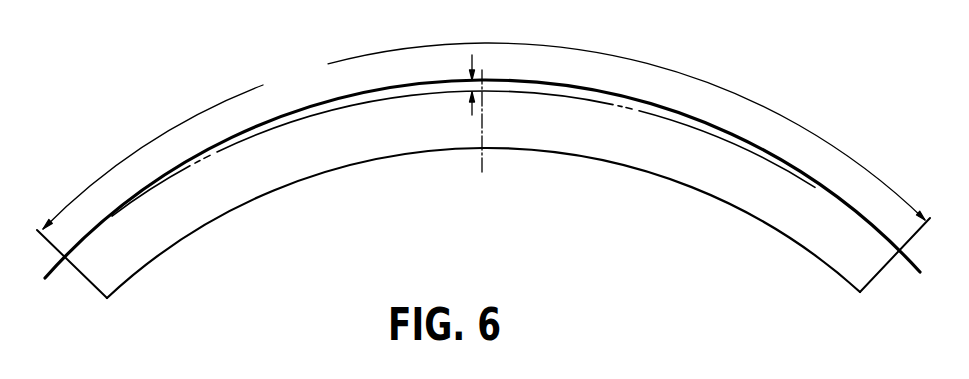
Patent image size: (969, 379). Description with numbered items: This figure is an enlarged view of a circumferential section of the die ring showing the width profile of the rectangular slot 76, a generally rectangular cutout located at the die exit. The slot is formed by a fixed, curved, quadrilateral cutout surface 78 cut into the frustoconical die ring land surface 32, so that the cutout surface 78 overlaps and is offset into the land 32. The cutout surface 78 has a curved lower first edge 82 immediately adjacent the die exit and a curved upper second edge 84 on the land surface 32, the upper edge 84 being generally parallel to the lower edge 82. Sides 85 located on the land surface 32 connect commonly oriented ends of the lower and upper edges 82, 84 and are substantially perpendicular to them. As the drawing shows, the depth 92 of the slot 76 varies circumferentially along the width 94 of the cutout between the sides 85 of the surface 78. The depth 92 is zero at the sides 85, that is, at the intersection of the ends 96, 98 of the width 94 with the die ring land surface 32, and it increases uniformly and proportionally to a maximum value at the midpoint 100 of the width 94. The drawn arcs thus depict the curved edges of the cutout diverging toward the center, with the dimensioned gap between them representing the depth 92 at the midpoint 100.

The die ring land surface 32 is at (898, 309).
The rectangular slot 76 is at (360, 181).
The rectangular cutout surface 78 is at (706, 175).
The lower first edge 82 is at (598, 90).
The upper second edge 84 is at (247, 201).
The sides 85 is at (88, 278).
The depth 92 is at (472, 115).
The width 94 is at (484, 136).
The end of the width 96 is at (108, 299).
The end of the width 98 is at (853, 294).
The midpoint 100 is at (483, 162).